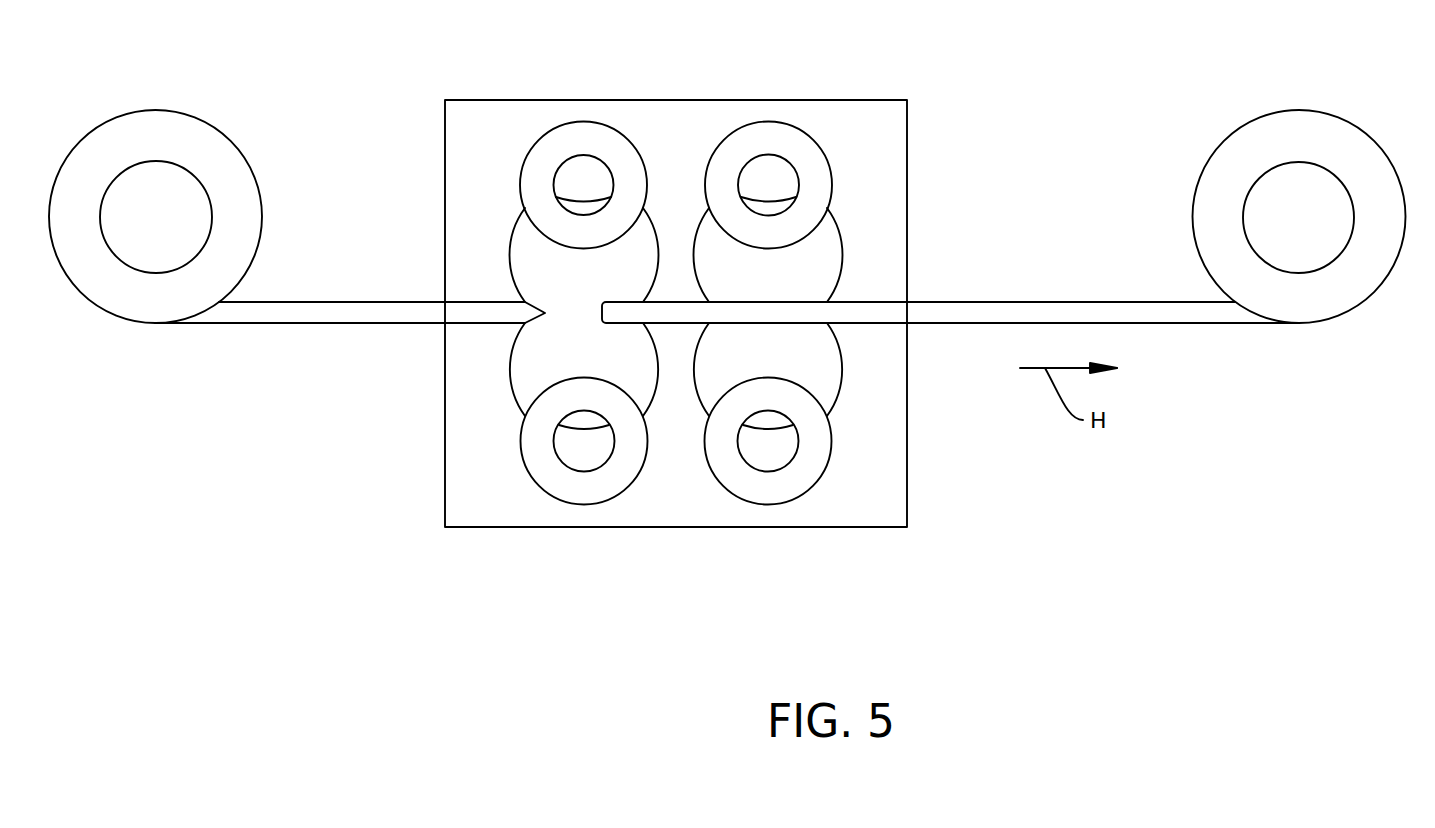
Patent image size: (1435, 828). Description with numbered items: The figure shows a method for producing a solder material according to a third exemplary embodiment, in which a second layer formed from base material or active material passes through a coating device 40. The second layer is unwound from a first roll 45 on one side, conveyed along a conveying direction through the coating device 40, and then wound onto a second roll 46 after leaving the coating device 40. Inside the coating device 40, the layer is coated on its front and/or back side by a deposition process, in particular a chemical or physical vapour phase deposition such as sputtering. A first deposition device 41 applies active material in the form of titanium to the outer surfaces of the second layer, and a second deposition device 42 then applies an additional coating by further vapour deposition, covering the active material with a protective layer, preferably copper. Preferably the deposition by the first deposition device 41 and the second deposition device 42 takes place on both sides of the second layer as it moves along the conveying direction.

The coating device 40 is at (822, 100).
The first deposition device 41 is at (654, 118).
The second deposition device 42 is at (878, 150).
The first roll 45 is at (183, 168).
The second roll 46 is at (1302, 177).